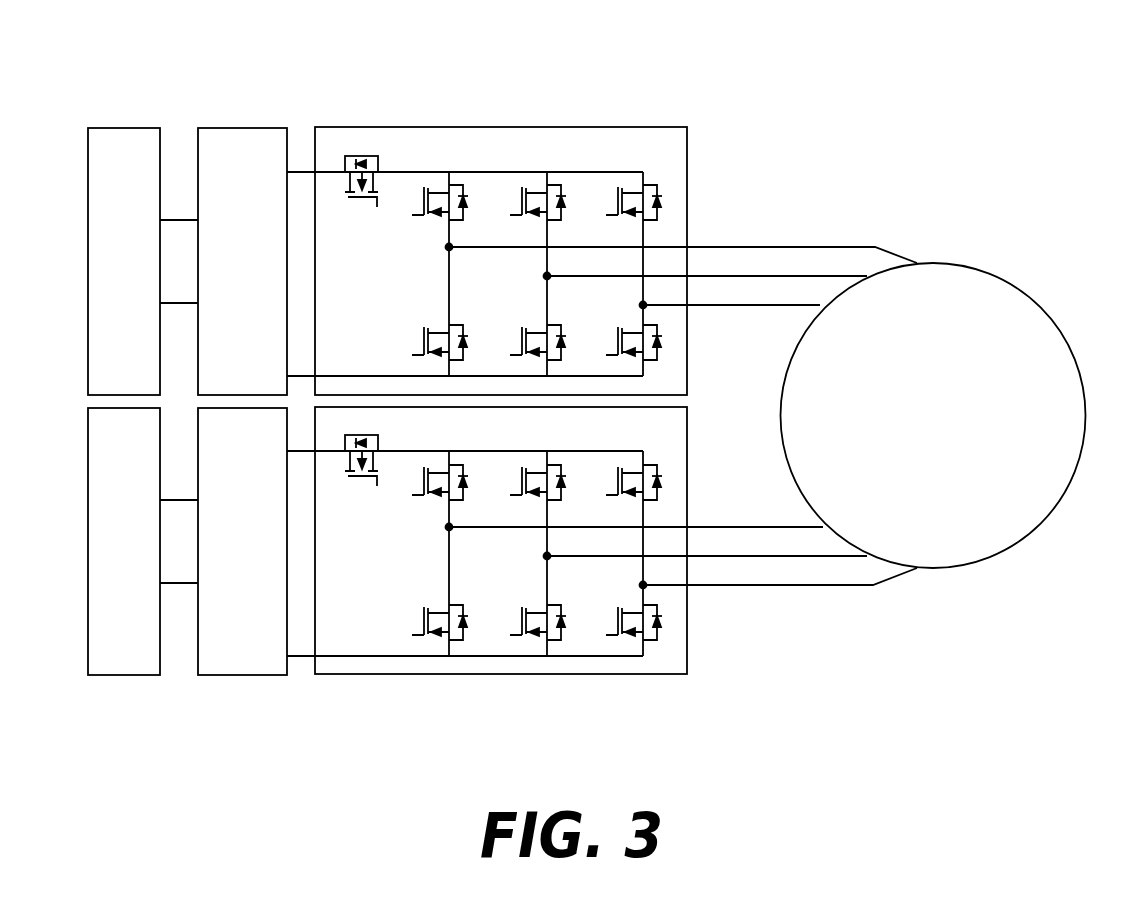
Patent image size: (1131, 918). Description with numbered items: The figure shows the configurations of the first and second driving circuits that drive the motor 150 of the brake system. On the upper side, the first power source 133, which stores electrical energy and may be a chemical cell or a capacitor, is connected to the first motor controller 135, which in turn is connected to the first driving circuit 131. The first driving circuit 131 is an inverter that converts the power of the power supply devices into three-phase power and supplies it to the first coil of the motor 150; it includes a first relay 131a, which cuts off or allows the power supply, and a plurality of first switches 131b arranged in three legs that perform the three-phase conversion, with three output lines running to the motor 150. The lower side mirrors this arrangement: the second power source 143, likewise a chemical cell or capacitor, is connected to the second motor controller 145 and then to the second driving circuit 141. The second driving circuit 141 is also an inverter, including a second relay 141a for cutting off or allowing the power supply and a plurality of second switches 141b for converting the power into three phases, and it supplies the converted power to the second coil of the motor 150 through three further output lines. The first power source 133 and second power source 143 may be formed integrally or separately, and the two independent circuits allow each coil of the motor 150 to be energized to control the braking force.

The first driving circuit 131 is at (501, 228).
The first relay 131a is at (363, 222).
The first switches 131b is at (472, 230).
The first power source 133 is at (122, 127).
The first motor controller 135 is at (242, 127).
The second driving circuit 141 is at (501, 575).
The second relay 141a is at (364, 500).
The second switches 141b is at (476, 604).
The second power source 143 is at (123, 675).
The second motor controller 145 is at (250, 675).
The motor 150 is at (933, 263).